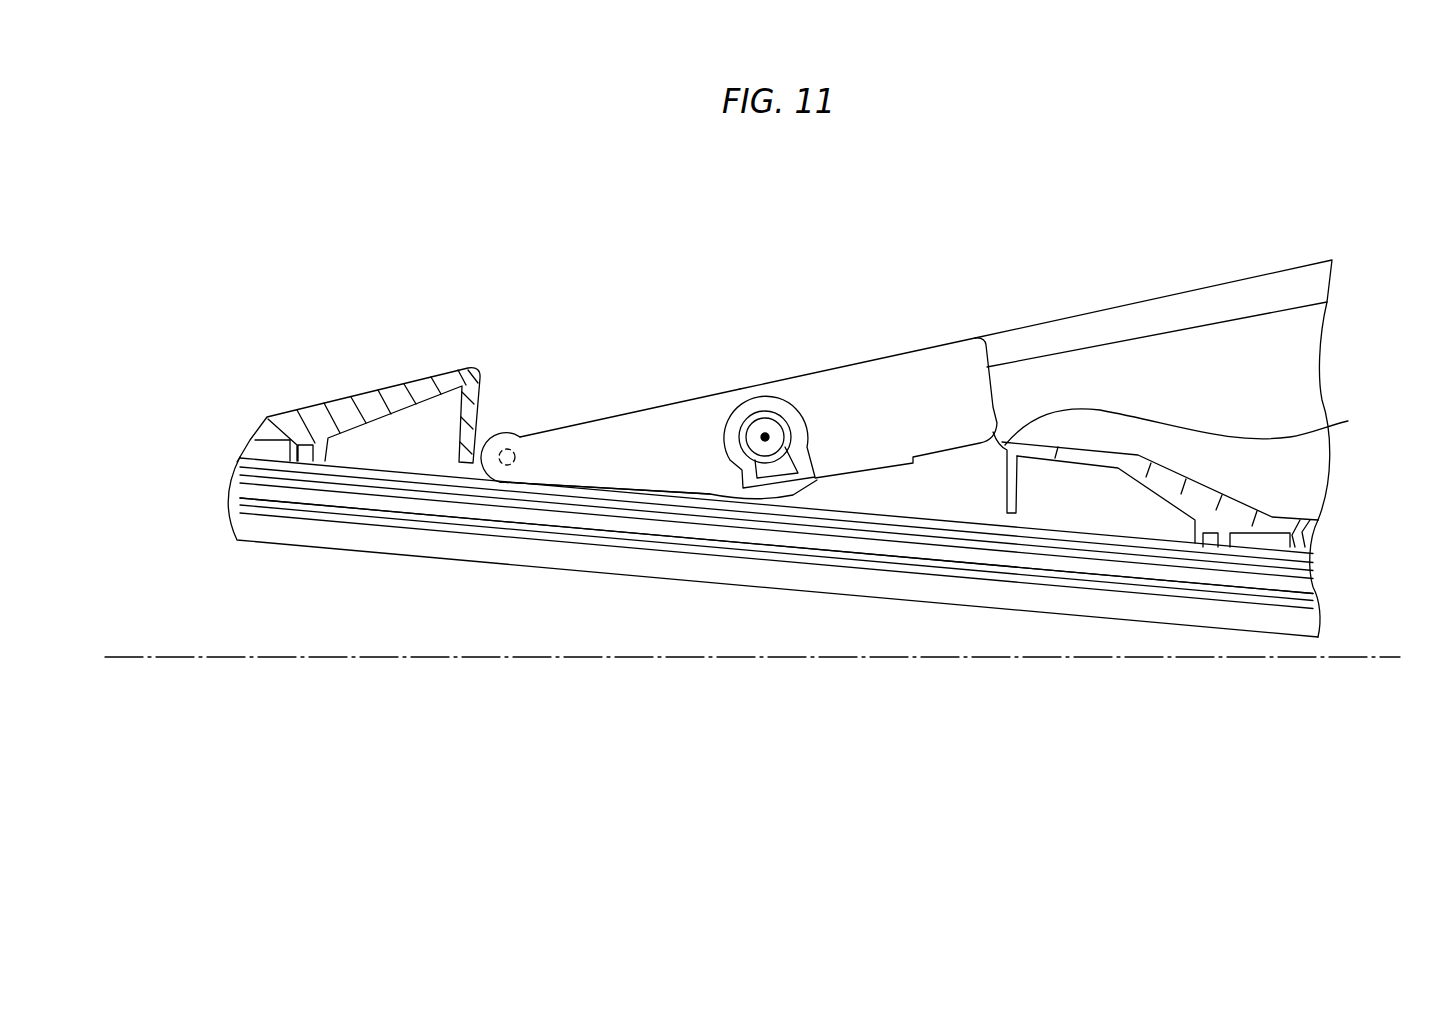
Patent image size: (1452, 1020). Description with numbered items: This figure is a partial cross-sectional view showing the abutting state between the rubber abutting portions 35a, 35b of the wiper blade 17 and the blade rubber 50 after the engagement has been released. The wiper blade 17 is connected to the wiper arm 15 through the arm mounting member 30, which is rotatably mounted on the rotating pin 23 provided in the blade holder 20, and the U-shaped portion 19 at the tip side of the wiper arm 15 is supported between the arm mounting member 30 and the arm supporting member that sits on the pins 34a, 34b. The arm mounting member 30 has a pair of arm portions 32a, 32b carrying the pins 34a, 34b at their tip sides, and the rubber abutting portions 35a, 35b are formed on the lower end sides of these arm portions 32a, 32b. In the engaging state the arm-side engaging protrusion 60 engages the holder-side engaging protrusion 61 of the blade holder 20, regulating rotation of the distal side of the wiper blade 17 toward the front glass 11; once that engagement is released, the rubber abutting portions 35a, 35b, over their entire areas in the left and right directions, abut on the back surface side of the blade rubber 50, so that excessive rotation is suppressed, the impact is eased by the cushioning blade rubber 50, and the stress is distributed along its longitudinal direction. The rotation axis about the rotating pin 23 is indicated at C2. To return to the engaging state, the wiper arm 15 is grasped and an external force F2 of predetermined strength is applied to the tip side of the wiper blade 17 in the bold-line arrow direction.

The front glass 11 is at (141, 655).
The wiper arm 15 is at (1253, 290).
The wiper blade 17 is at (297, 328).
The U-shaped portion 19 is at (780, 480).
The blade holder 20 is at (1297, 520).
The rotating pin 23 is at (761, 382).
The arm mounting member 30 is at (886, 338).
The arm portion 32a is at (647, 400).
The arm portion 32b is at (605, 488).
The pin 34a is at (517, 383).
The pin 34b is at (507, 457).
The rubber abutting portion 35a is at (640, 490).
The rubber abutting portion 35b is at (321, 534).
The blade rubber 50 is at (774, 547).
The arm-side engaging protrusion 60 is at (1005, 420).
The holder-side engaging protrusion 61 is at (1191, 427).
The rotation axis C2 is at (765, 433).
The external force F2 is at (386, 340).